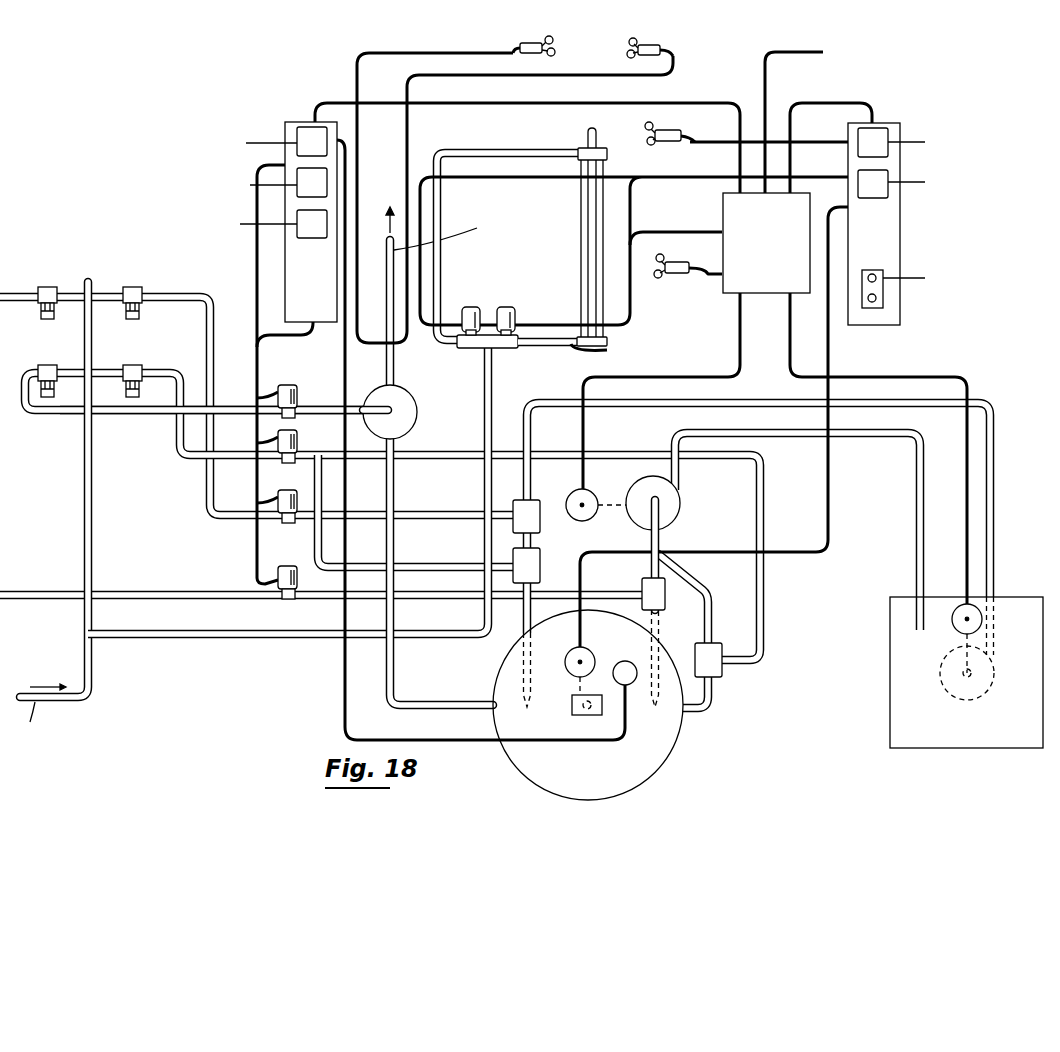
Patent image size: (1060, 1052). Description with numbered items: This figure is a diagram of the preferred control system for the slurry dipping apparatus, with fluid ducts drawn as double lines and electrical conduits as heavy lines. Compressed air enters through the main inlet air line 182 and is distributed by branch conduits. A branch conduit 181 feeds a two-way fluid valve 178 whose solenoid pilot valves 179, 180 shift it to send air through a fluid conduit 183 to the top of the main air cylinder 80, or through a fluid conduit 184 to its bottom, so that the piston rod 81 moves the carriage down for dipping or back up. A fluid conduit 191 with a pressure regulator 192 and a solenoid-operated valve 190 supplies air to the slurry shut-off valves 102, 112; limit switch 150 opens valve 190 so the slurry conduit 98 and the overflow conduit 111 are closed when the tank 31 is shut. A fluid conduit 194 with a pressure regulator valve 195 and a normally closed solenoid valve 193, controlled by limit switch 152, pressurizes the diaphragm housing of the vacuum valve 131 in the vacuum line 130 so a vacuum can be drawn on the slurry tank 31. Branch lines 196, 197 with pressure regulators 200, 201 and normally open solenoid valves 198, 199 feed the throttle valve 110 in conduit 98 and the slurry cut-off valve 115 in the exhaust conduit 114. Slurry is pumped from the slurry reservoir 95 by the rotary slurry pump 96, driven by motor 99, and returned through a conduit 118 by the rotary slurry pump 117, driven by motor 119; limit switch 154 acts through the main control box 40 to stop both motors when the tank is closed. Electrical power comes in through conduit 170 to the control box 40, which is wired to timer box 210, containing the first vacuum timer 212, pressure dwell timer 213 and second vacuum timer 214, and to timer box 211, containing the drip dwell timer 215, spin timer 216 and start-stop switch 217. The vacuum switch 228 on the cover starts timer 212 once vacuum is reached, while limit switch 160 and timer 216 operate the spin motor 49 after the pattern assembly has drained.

The slurry tank 31 is at (530, 775).
The main control box 40 is at (762, 293).
The spin motor 49 is at (588, 658).
The main air cylinder 80 is at (582, 202).
The piston rod 81 is at (588, 135).
The slurry reservoir 95 is at (940, 672).
The rotary slurry pump 96 is at (985, 680).
The slurry conduit 98 is at (560, 400).
The pump motor 99 is at (958, 604).
The slurry shut-off valve 102 is at (540, 552).
The throttle valve 110 is at (530, 500).
The overflow conduit 111 is at (710, 597).
The slurry shut-off valve 112 is at (722, 668).
The exhaust conduit 114 is at (648, 572).
The slurry cut-off valve 115 is at (665, 605).
The rotary slurry pump 117 is at (680, 514).
The return conduit 118 is at (852, 438).
The pump motor 119 is at (588, 492).
The vacuum line 130 is at (393, 380).
The vacuum valve 131 is at (422, 424).
The limit switch 150 is at (518, 46).
The limit switch 152 is at (665, 46).
The limit switch 154 is at (682, 280).
The limit switch 160 is at (668, 143).
The electrical supply line 170 is at (763, 82).
The two-way fluid valve 178 is at (515, 350).
The solenoid operated pilot valve 179 is at (485, 300).
The solenoid operated pilot valve 180 is at (515, 308).
The branch conduit 181 is at (487, 395).
The main inlet air line 182 is at (95, 668).
The fluid conduit 183 is at (513, 150).
The fluid conduit 184 is at (607, 345).
The solenoid-operated valve 190 is at (297, 434).
The fluid conduit 191 is at (178, 448).
The pressure regulator 192 is at (135, 365).
The solenoid operated valve 193 is at (288, 386).
The fluid conduit 194 is at (60, 416).
The pressure regulator valve 195 is at (55, 357).
The branch line 196 is at (207, 492).
The branch line 197 is at (220, 593).
The solenoid operated valve 198 is at (297, 490).
The solenoid valve 199 is at (290, 568).
The pressure regulator 200 is at (133, 287).
The pressure regulator 201 is at (47, 287).
The timer box 210 is at (196, 203).
The timer box 211 is at (943, 205).
The first vacuum timer 212 is at (297, 130).
The pressure dwell timer 213 is at (297, 175).
The second vacuum timer 214 is at (310, 238).
The drip dwell timer 215 is at (888, 150).
The spin timer 216 is at (888, 195).
The start-stop switch 217 is at (883, 300).
The vacuum switch 228 is at (630, 688).